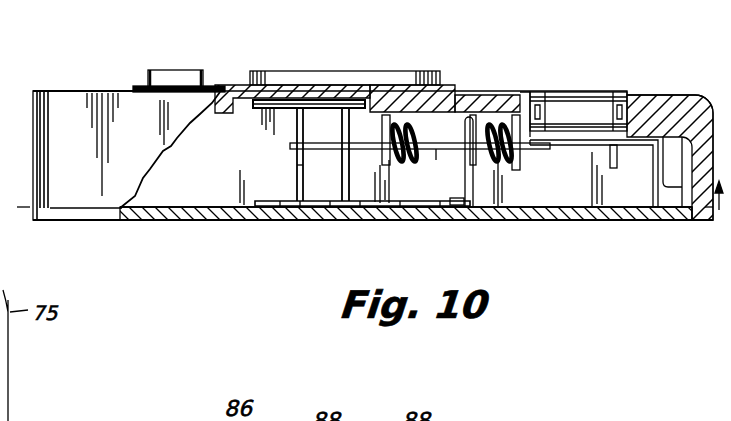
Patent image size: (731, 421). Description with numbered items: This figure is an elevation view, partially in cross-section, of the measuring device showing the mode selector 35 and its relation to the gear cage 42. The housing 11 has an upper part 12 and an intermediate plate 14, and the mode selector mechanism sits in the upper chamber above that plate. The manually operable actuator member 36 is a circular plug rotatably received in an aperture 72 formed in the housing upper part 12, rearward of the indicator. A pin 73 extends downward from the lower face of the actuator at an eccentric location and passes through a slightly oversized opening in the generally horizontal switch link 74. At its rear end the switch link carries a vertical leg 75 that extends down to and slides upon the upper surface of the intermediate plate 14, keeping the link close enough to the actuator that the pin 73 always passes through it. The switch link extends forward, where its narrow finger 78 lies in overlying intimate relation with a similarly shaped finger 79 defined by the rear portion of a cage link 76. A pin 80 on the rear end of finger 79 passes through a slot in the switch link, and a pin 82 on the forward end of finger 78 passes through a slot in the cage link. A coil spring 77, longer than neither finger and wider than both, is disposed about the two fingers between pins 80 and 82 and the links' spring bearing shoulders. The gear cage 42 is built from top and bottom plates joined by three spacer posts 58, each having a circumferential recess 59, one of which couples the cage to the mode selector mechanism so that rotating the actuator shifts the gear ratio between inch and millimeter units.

The housing 11 is at (718, 206).
The upper part 12 is at (686, 113).
The intermediate plate 14 is at (617, 221).
The mode selector 35 is at (520, 192).
The actuator member 36 is at (590, 93).
The gear cage 42 is at (310, 195).
The spacer posts 58 is at (297, 170).
The circumferential recess 59 is at (297, 146).
The aperture 72 is at (620, 94).
The pin 73 is at (614, 168).
The switch link 74 is at (570, 156).
The vertical leg 75 is at (676, 188).
The cage link 76 is at (436, 160).
The coil spring 77 is at (425, 114).
The finger 78 is at (462, 122).
The finger 79 is at (463, 122).
The pin 80 is at (520, 115).
The pin 82 is at (416, 72).